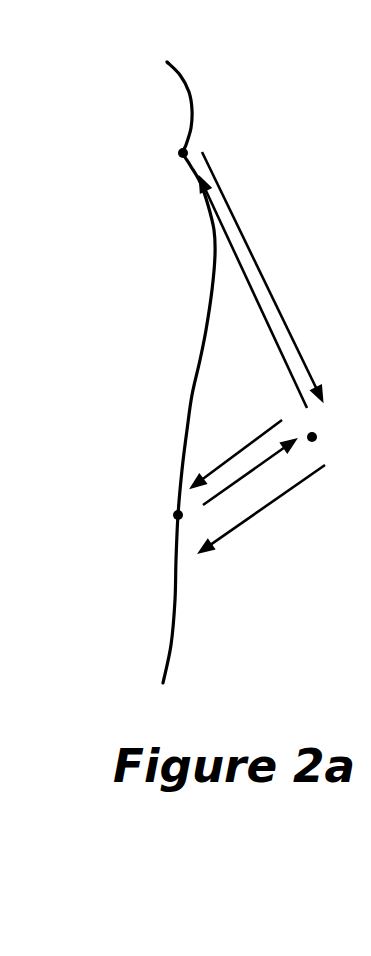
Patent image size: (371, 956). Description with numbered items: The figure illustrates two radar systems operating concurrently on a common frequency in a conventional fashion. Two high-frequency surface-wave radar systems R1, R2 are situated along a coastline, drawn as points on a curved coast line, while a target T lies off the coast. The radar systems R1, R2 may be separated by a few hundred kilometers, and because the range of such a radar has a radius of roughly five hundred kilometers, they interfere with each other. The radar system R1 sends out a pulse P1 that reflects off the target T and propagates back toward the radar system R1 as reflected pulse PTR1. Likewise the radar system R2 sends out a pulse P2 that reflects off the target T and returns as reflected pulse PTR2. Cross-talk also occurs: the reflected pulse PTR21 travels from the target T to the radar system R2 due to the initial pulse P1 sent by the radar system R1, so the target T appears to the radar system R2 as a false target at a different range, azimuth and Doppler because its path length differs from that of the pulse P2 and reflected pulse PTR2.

The first radar system R1 is at (160, 157).
The second radar system R2 is at (156, 524).
The target T is at (326, 438).
The pulse P1 is at (262, 276).
The reflected pulse PTR1 is at (253, 293).
The reflected pulse PTR21 is at (235, 440).
The pulse P2 is at (249, 472).
The reflected pulse PTR2 is at (262, 508).